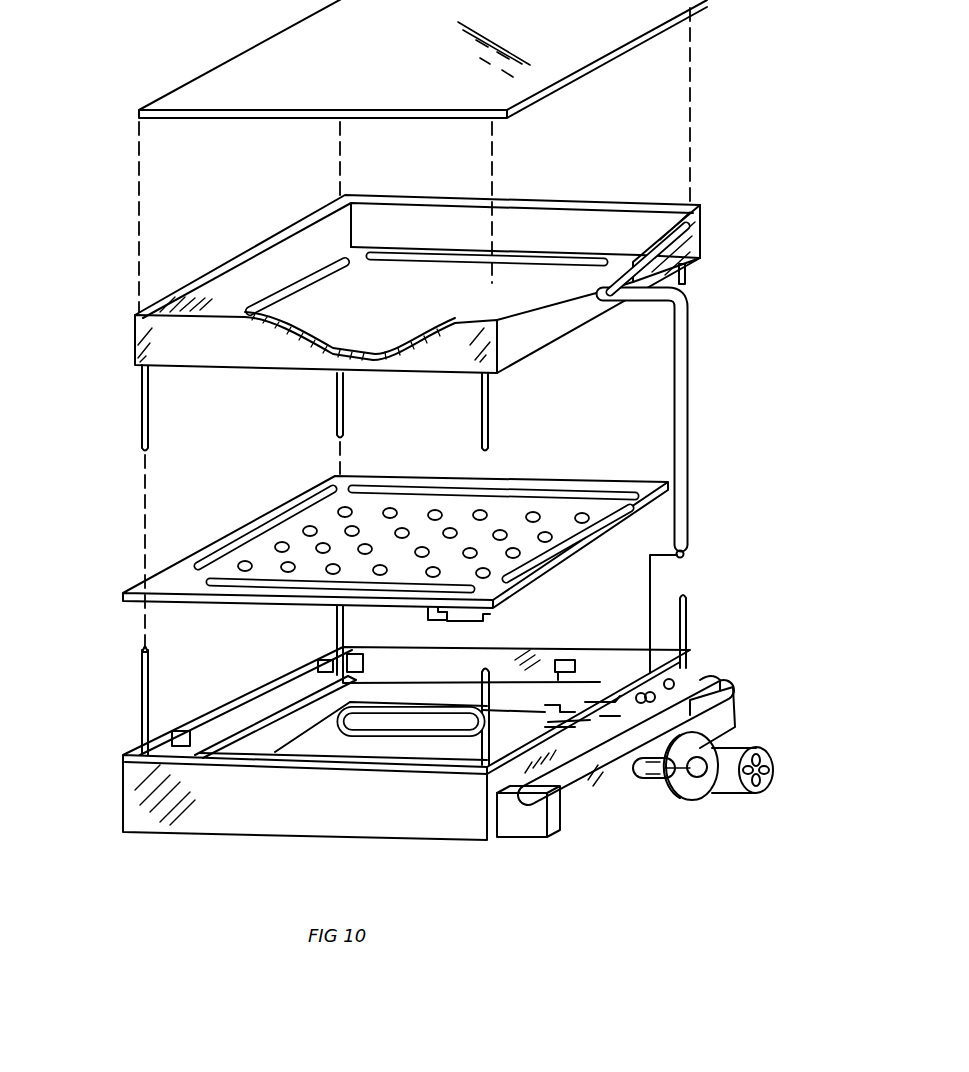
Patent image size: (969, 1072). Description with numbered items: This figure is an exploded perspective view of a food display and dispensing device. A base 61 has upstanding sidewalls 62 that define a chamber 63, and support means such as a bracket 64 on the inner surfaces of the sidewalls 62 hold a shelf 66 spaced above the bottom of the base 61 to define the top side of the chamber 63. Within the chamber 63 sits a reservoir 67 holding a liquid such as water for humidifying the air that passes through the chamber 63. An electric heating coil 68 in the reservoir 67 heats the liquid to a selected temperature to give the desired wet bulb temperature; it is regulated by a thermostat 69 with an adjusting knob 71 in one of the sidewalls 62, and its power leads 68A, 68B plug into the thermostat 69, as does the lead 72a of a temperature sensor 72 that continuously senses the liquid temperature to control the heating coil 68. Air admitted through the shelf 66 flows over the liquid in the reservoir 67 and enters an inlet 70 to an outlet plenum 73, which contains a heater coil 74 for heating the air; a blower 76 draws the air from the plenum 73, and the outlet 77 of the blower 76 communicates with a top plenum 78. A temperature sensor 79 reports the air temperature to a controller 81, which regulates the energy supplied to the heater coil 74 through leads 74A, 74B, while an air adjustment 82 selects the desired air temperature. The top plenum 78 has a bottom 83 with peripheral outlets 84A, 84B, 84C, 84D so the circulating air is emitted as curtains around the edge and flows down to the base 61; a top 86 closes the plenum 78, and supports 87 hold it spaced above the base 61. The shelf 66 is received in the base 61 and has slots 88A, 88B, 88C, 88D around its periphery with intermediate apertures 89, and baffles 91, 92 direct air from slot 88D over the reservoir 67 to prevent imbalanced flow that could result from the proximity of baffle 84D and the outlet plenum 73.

The base 61 is at (125, 780).
The sidewalls 62 is at (385, 652).
The chamber 63 is at (272, 700).
The bracket 64 is at (372, 692).
The shelf 66 is at (617, 479).
The reservoir 67 is at (270, 742).
The electric heating coil 68 is at (445, 706).
The power lead 68A is at (582, 700).
The power lead 68B is at (605, 705).
The thermostat 69 is at (700, 650).
The inlet 70 is at (527, 822).
The adjusting knob 71 is at (690, 688).
The temperature sensor 72 is at (538, 688).
The lead 72a is at (547, 690).
The outlet plenum 73 is at (575, 800).
The heater coil 74 is at (610, 770).
The lead 74A is at (705, 684).
The lead 74B is at (712, 694).
The blower 76 is at (712, 790).
The outlet 77 is at (718, 760).
The top plenum 78 is at (452, 222).
The temperature sensor 79 is at (690, 530).
The controller 81 is at (652, 665).
The air adjustment 82 is at (680, 680).
The bottom 83 is at (432, 303).
The tray slot 84A is at (490, 270).
The tray slot 84B is at (285, 305).
The tray front notch 84C is at (330, 358).
The baffle 84D is at (602, 272).
The top 86 is at (385, 73).
The supports 87 is at (688, 279).
The slot 88A is at (462, 488).
The slot 88B is at (284, 505).
The slot 88C is at (282, 598).
The slot 88D is at (612, 533).
The aperture 89 is at (540, 512).
The baffle 91 is at (430, 607).
The baffle 92 is at (468, 614).